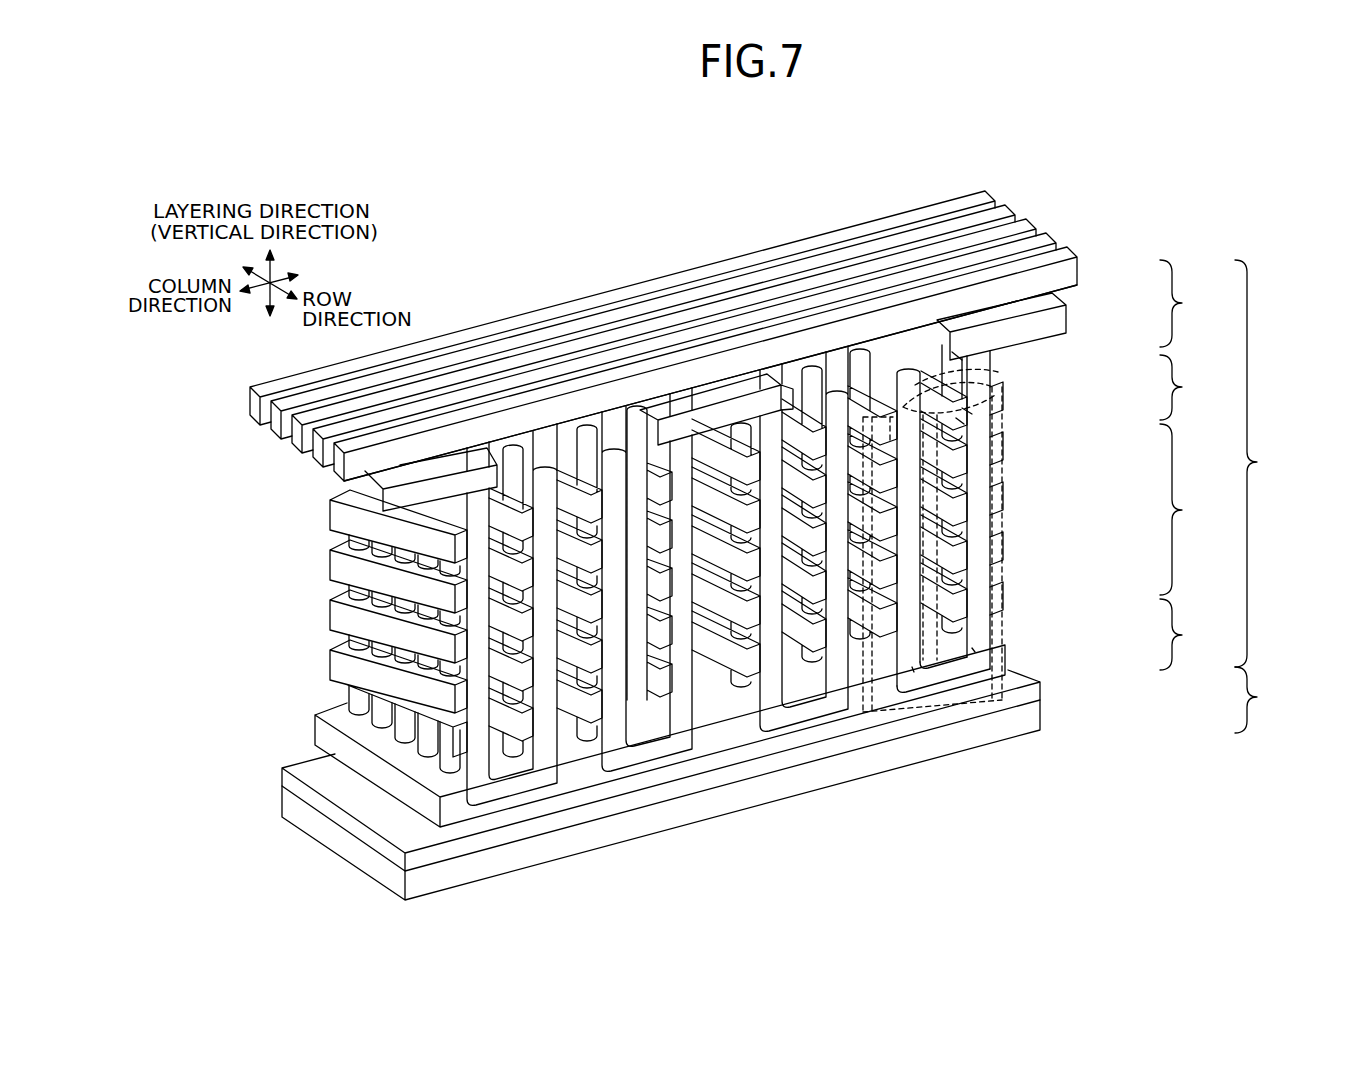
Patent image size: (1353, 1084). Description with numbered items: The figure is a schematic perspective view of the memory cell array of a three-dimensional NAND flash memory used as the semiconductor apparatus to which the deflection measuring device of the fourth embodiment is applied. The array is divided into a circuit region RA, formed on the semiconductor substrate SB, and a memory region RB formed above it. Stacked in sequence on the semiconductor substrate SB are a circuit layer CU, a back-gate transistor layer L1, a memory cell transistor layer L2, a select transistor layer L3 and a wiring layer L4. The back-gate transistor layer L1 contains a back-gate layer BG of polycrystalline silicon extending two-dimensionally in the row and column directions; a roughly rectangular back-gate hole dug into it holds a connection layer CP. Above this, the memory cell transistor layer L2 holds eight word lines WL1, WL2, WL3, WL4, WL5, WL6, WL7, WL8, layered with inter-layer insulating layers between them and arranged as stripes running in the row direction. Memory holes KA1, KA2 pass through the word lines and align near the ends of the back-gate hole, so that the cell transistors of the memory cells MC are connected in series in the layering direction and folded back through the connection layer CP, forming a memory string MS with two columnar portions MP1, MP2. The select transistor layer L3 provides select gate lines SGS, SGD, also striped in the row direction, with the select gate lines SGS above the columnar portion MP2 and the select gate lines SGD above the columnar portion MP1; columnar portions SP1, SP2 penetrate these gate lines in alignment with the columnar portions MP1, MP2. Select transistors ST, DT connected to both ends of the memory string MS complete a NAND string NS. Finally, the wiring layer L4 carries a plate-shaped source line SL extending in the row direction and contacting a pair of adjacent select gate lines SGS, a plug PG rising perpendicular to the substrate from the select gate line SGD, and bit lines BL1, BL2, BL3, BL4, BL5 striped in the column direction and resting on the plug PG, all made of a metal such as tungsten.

The bit line BL1 is at (1068, 248).
The bit line BL2 is at (1048, 234).
The bit line BL3 is at (1028, 220).
The bit line BL4 is at (1007, 206).
The bit line BL5 is at (988, 191).
The plug PG is at (1079, 283).
The source line SL is at (1070, 320).
The columnar portion SP1 is at (958, 358).
The columnar portion SP2 is at (968, 412).
The select transistor DT is at (965, 383).
The NAND string NS is at (948, 400).
The select gate line SGS is at (1000, 403).
The select transistor ST is at (960, 420).
The select gate line SGD is at (935, 432).
The word line WL1 is at (1002, 445).
The word line WL2 is at (1003, 500).
The word line WL3 is at (1003, 555).
The word line WL4 is at (1003, 598).
The word line WL5 is at (933, 620).
The word line WL6 is at (930, 557).
The word line WL7 is at (940, 508).
The word line WL8 is at (978, 457).
The memory cell MC is at (1000, 517).
The back-gate layer BG is at (1000, 660).
The circuit layer CU is at (1040, 690).
The semiconductor substrate SB is at (1040, 715).
The back-gate transistor layer L1 is at (1185, 634).
The memory cell transistor layer L2 is at (1185, 509).
The select transistor layer L3 is at (1185, 387).
The wiring layer L4 is at (1185, 303).
The memory region RB is at (1264, 463).
The circuit region RA is at (1264, 700).
The memory hole KA1 is at (912, 667).
The memory hole KA2 is at (972, 648).
The columnar portion MP1 is at (973, 640).
The columnar portion MP2 is at (963, 660).
The memory string MS is at (927, 703).
The connection layer CP is at (950, 677).